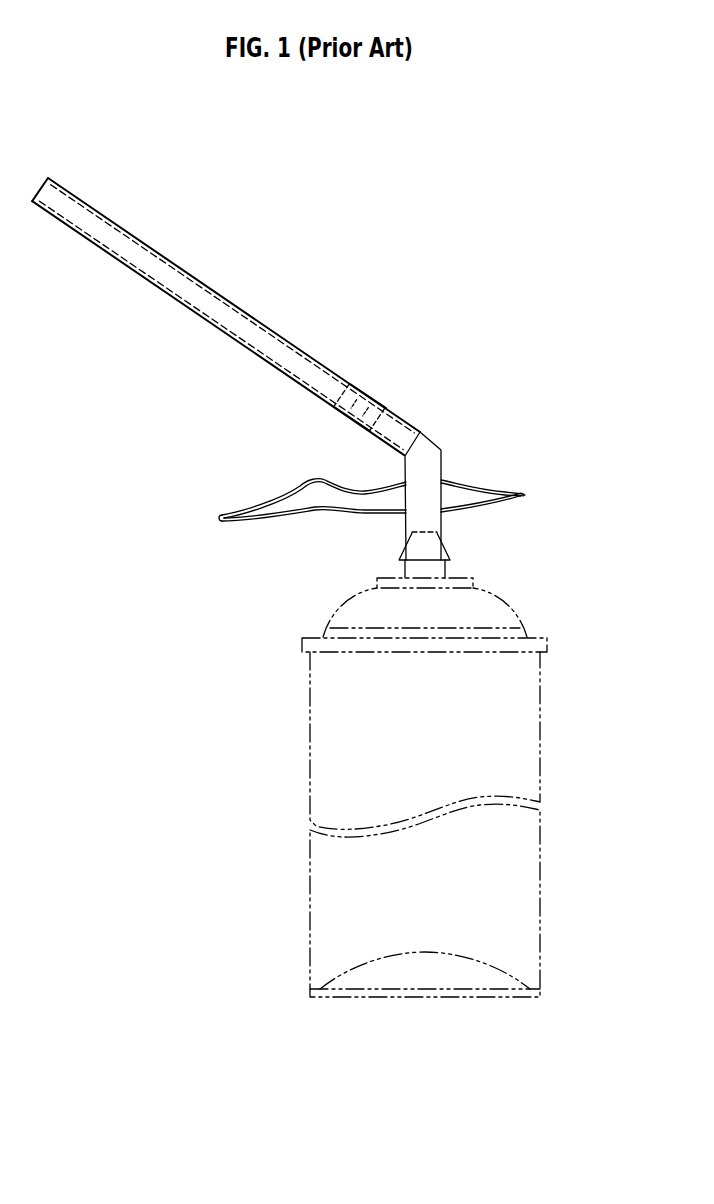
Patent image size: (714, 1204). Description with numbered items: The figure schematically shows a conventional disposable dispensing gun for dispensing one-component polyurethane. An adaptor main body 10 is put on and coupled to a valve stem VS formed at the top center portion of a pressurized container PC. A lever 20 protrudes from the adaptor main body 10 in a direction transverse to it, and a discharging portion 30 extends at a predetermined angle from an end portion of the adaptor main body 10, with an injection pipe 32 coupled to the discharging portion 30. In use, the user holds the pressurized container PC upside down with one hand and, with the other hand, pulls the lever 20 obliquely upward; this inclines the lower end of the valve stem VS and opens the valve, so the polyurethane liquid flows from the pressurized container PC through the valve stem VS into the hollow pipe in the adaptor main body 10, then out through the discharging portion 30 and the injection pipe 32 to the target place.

The adaptor main body 10 is at (428, 473).
The lever 20 is at (262, 505).
The discharging portion 30 is at (394, 424).
The injection pipe 32 is at (205, 297).
The valve stem VS is at (445, 547).
The pressurized container PC is at (540, 728).